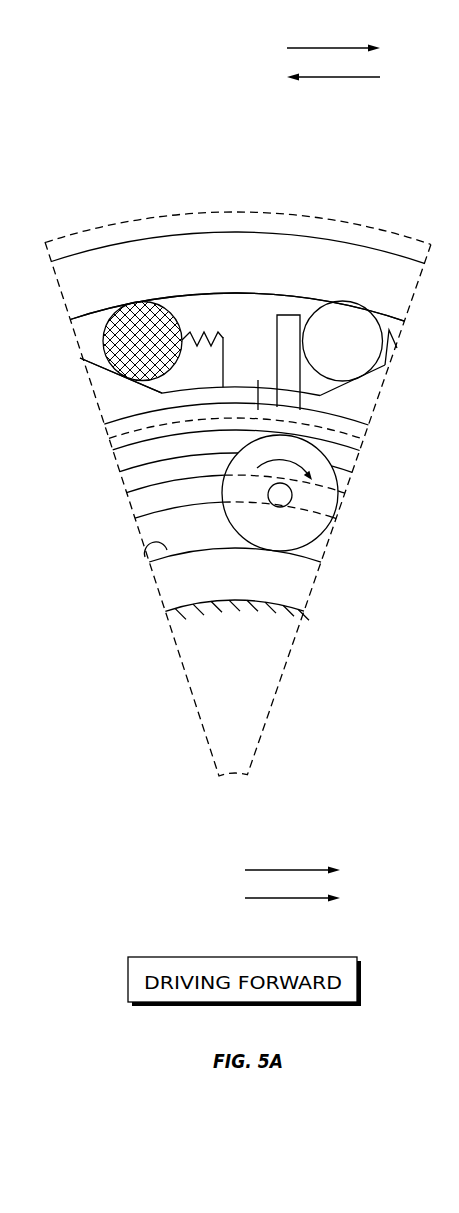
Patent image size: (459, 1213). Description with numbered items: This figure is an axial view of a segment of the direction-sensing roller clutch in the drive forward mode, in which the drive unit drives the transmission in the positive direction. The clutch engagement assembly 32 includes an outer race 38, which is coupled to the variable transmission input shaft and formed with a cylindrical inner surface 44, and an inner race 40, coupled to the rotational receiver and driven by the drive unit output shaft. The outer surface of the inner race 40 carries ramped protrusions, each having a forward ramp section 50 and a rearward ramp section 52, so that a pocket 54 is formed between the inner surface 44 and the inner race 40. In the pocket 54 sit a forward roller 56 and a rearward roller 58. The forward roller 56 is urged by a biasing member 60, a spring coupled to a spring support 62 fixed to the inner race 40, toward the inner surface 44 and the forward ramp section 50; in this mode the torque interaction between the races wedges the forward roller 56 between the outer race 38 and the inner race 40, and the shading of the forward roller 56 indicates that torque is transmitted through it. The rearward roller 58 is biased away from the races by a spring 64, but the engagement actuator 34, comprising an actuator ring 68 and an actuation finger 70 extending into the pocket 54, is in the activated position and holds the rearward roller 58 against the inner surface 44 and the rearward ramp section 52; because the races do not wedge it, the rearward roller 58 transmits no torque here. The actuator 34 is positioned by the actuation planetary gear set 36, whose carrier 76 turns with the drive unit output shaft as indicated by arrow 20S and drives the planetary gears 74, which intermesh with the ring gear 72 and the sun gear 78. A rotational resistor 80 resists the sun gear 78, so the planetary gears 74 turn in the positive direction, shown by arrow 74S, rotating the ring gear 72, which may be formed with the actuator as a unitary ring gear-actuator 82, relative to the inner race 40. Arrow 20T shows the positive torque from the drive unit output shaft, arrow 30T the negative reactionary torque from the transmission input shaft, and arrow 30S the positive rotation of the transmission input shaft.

The clutch engagement assembly 32 is at (112, 185).
The arrow indicating transmission input shaft rotation 30S is at (337, 48).
The arrow indicating reactionary torque 30T is at (337, 78).
The arrow indicating drive unit output shaft rotation 20S is at (290, 870).
The arrow indicating drive unit torque 20T is at (290, 899).
The engagement actuator 34 is at (333, 184).
The actuator ring 68 is at (258, 410).
The actuation finger 70 is at (292, 314).
The outer race 38 is at (97, 313).
The cylindrical inner surface 44 is at (102, 335).
The pocket 54 is at (186, 302).
The forward roller 56 is at (80, 358).
The forward ramp section 50 is at (90, 383).
The inner race 40 is at (117, 394).
The biasing member 60 is at (208, 338).
The spring support 62 is at (226, 372).
The rearward roller 58 is at (383, 333).
The spring 64 is at (397, 349).
The rearward ramp section 52 is at (387, 366).
The unitary ring gear-actuator 82 is at (369, 436).
The actuation planetary gear set 36 is at (70, 452).
The ring gear 72 is at (137, 440).
The planetary gear 74 is at (125, 481).
The arrow indicating planetary gear rotation 74S is at (303, 455).
The carrier 76 is at (140, 501).
The sun gear 78 is at (147, 551).
The rotational resistor 80 is at (197, 617).